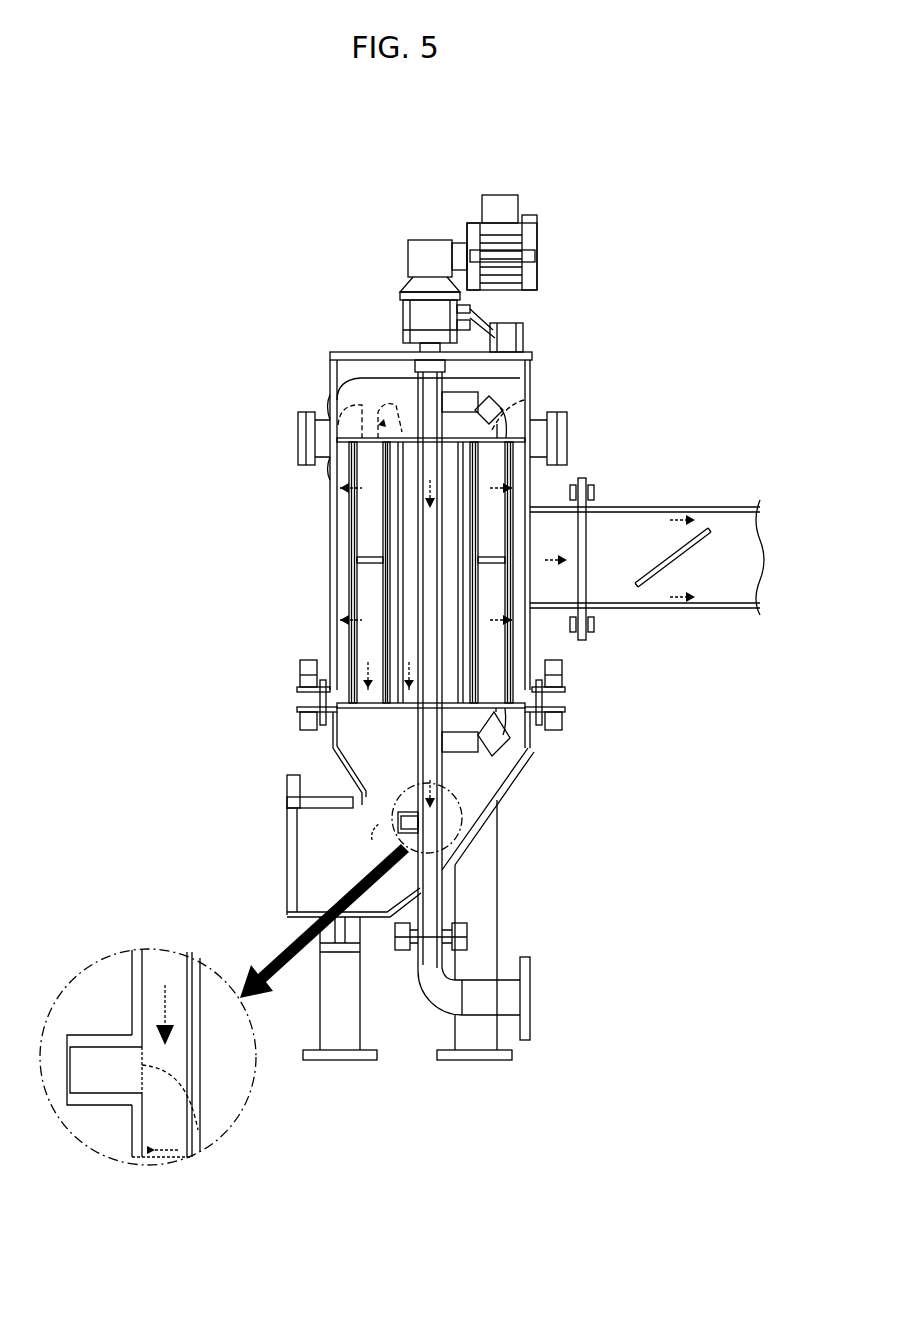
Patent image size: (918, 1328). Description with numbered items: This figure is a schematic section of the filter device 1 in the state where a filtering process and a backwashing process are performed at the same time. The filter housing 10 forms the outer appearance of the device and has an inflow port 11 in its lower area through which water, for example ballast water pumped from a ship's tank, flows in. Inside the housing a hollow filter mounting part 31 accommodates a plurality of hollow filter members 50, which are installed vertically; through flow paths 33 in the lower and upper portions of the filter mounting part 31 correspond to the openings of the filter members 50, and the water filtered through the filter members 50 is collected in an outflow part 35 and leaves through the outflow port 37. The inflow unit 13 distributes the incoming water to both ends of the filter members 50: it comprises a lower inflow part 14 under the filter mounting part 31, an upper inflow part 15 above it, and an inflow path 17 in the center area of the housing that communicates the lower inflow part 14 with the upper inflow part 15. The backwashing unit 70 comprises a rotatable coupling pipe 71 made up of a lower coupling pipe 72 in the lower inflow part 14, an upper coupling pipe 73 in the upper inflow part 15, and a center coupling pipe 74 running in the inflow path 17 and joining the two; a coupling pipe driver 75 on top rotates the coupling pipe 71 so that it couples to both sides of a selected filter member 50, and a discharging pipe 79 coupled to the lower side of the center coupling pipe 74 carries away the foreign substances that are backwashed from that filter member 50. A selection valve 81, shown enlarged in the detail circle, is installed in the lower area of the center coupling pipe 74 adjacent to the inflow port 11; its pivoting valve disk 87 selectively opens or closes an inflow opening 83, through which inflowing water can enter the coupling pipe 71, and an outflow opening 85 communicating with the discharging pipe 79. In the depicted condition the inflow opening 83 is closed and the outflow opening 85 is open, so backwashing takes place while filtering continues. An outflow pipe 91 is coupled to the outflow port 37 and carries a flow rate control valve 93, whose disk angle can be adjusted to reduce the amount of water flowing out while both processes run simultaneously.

The filter device 1 is at (240, 238).
The filter housing 10 is at (332, 550).
The inflow port 11 is at (288, 895).
The inflow unit 13 is at (207, 625).
The lower inflow part 14 is at (340, 780).
The upper inflow part 15 is at (330, 355).
The inflow path 17 is at (420, 655).
The filter mounting part 31 is at (332, 402).
The through flow path 33 is at (380, 430).
The outflow part 35 is at (520, 530).
The outflow port 37 is at (520, 650).
The filter member 50 is at (520, 680).
The backwashing unit 70 is at (693, 722).
The coupling pipe 71 is at (655, 722).
The lower coupling pipe 72 is at (500, 748).
The upper coupling pipe 73 is at (495, 396).
The center coupling pipe 74 is at (440, 790).
The coupling pipe driver 75 is at (540, 243).
The discharging pipe 79 is at (478, 870).
The selection valve 81 is at (390, 823).
The inflow opening 83 is at (72, 1075).
The outflow opening 85 is at (130, 1157).
The valve disk 87 is at (200, 1135).
The outflow pipe 91 is at (745, 510).
The flow rate control valve 93 is at (708, 530).